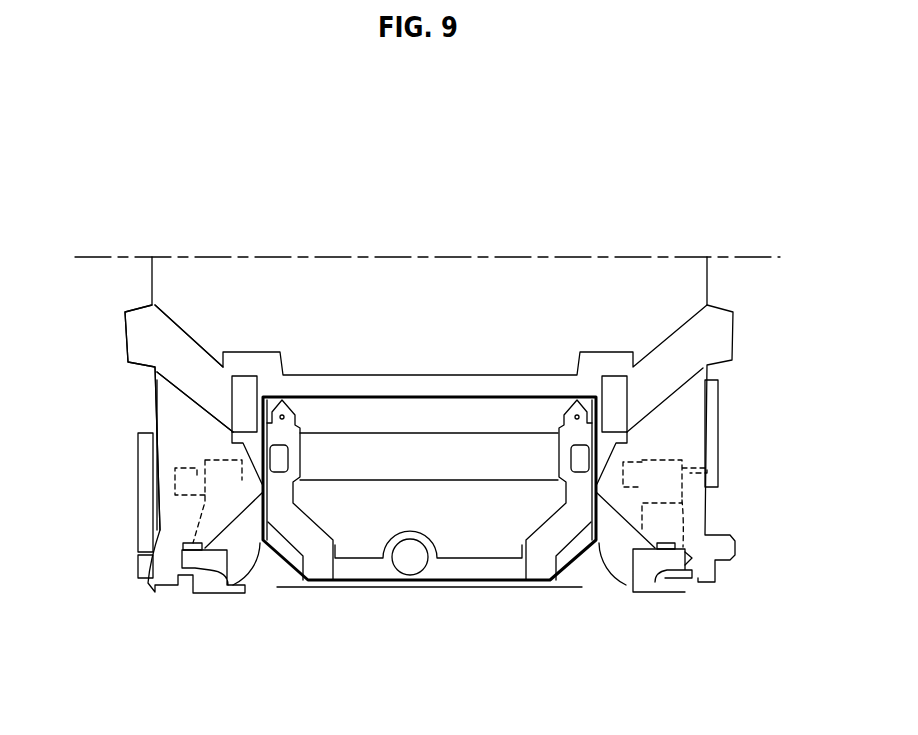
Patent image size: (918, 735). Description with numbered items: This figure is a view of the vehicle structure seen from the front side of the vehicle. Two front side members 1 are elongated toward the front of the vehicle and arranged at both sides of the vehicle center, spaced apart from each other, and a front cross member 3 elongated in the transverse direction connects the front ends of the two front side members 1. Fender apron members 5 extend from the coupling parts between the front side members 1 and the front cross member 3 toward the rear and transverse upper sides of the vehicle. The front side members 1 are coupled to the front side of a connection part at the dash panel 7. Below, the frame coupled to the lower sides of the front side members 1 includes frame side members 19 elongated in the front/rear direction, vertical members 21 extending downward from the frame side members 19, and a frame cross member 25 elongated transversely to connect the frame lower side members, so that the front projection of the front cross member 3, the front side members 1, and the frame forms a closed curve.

The front side member 1 is at (245, 390).
The front cross member 3 is at (525, 385).
The fender apron member 5 is at (162, 340).
The dash panel 7 is at (437, 293).
The frame side member 19 is at (280, 458).
The vertical member 21 is at (287, 514).
The frame cross member 25 is at (378, 568).